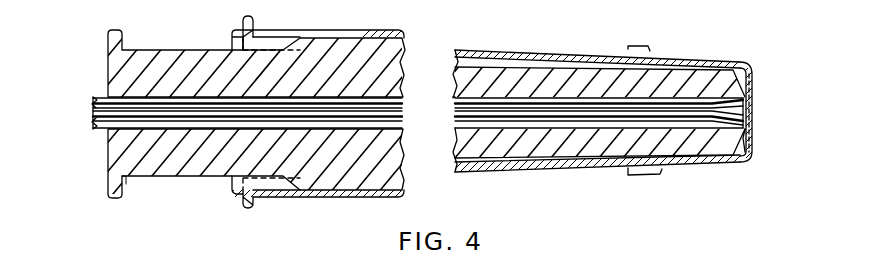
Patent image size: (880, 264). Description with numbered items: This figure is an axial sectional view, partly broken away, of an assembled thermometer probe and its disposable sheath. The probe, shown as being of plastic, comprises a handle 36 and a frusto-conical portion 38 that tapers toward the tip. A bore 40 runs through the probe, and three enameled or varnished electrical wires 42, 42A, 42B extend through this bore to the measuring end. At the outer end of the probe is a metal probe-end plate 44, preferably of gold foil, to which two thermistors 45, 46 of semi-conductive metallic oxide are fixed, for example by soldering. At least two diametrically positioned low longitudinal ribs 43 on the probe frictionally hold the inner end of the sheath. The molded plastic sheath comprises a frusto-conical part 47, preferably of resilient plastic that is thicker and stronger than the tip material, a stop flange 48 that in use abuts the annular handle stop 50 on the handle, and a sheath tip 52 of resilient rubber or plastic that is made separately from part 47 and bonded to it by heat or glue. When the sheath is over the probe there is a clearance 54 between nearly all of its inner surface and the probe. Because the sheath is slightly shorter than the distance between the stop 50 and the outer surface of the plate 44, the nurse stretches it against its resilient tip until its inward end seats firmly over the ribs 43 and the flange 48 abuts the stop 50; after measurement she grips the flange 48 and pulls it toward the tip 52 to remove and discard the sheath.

The handle 36 is at (222, 176).
The frusto-conical portion 38 is at (328, 180).
The bore 40 is at (400, 90).
The electrical wire 42 is at (400, 112).
The electrical wire 42A is at (91, 112).
The electrical wire 42B is at (382, 122).
The longitudinal ribs 43 is at (262, 37).
The probe-end plate 44 is at (748, 72).
The thermistor 45 is at (750, 96).
The thermistor 46 is at (747, 140).
The frusto-conical part 47 is at (566, 170).
The stop flange 48 is at (254, 204).
The annular handle stop 50 is at (241, 32).
The sheath tip 52 is at (668, 168).
The clearance 54 is at (590, 62).